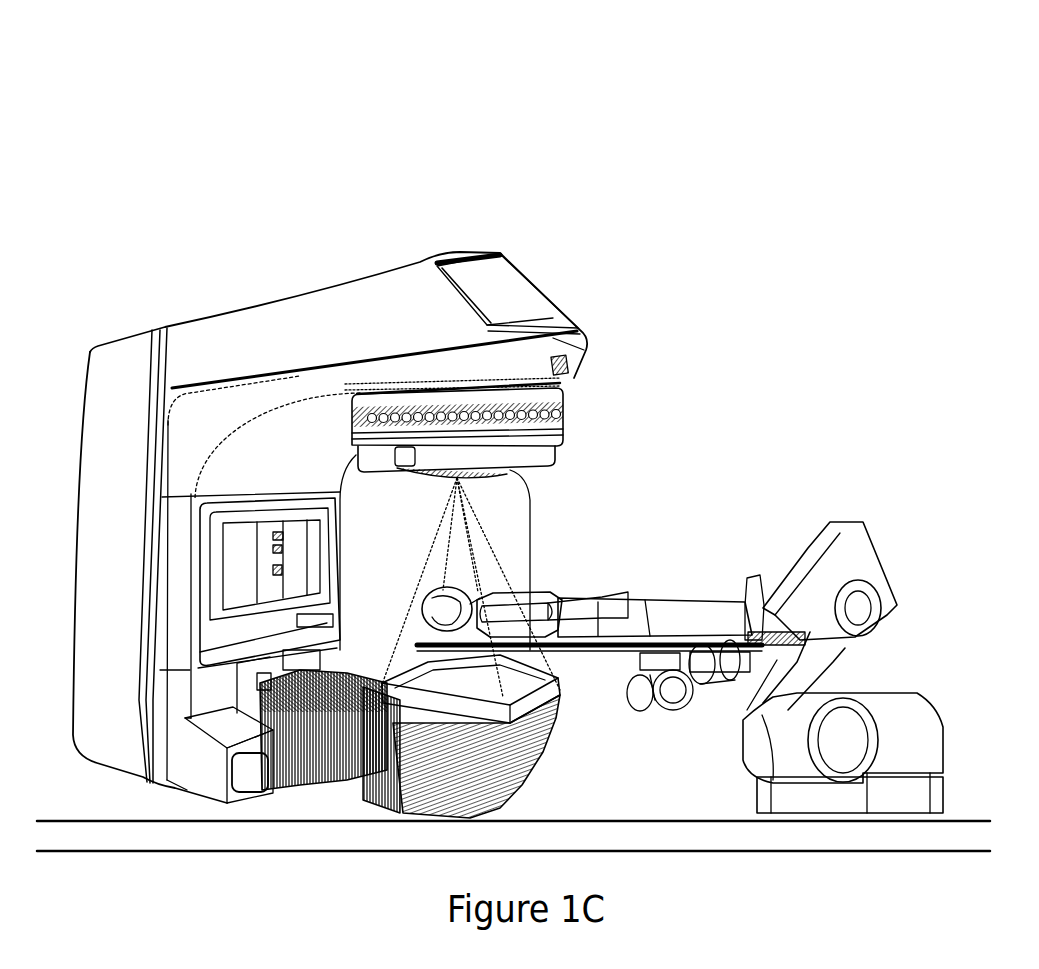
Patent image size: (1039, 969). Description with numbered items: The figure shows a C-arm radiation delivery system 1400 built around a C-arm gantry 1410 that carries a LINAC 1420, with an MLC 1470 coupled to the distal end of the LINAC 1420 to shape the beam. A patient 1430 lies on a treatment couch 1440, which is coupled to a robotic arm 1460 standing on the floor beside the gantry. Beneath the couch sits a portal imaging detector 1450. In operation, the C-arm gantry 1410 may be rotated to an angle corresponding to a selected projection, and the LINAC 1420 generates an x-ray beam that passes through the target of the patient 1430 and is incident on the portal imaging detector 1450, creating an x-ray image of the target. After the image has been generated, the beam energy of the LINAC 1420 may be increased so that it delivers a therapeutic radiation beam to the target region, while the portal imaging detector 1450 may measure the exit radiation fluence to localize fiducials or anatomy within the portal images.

The C-arm radiation delivery system 1400 is at (505, 33).
The C-arm gantry 1410 is at (316, 290).
The LINAC 1420 is at (565, 423).
The patient 1430 is at (427, 577).
The treatment couch 1440 is at (420, 633).
The portal imaging detector 1450 is at (560, 687).
The robotic arm 1460 is at (875, 535).
The MLC 1470 is at (474, 479).